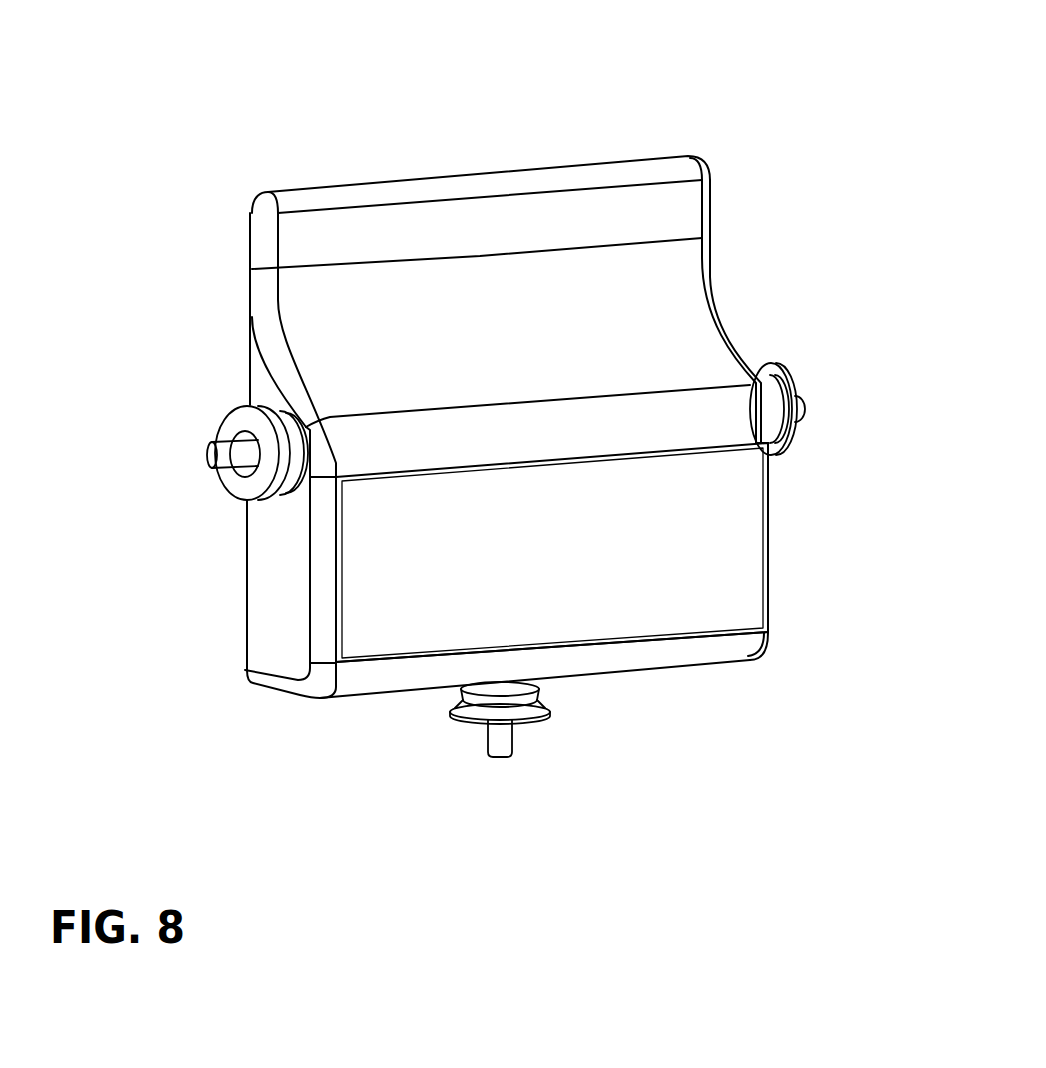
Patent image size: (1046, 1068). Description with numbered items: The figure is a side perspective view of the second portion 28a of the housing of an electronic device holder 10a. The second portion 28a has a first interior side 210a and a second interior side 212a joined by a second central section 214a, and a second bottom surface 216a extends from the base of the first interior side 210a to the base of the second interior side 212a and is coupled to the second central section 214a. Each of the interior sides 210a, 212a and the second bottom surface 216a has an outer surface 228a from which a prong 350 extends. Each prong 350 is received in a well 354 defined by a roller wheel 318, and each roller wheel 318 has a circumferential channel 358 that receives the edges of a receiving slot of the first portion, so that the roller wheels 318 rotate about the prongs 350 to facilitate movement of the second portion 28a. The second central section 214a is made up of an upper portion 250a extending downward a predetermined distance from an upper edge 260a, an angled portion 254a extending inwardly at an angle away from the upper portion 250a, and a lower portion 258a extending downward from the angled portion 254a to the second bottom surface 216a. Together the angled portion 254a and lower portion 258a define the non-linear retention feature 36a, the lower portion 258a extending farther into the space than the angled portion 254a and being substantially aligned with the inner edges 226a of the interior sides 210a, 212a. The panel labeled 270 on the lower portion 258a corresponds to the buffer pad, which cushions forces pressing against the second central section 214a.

The electronic device holder 10a is at (241, 106).
The second portion 28a is at (228, 177).
The first interior side 210a is at (718, 296).
The upper edge 260a is at (613, 175).
The upper portion 250a is at (307, 233).
The second central section 214a is at (638, 285).
The angled portion 254a is at (657, 340).
The second interior side 212a is at (260, 388).
The non-linear retention feature 36a is at (435, 428).
The outer surface 228a is at (283, 595).
The inner edges 226a is at (327, 625).
The second bottom surface 216a is at (372, 695).
The lower portion 258a is at (662, 655).
The panel 270 is at (687, 580).
The circumferential channel 358 is at (242, 507).
The roller wheel 318 is at (242, 487).
The well 354 is at (243, 471).
The prong 350 is at (212, 456).